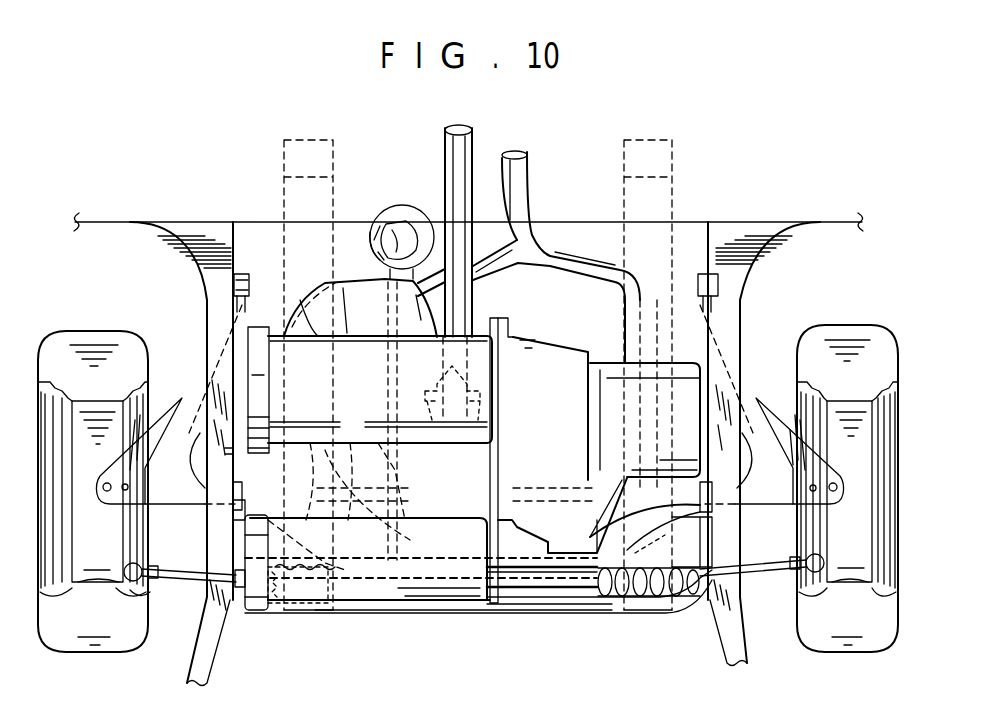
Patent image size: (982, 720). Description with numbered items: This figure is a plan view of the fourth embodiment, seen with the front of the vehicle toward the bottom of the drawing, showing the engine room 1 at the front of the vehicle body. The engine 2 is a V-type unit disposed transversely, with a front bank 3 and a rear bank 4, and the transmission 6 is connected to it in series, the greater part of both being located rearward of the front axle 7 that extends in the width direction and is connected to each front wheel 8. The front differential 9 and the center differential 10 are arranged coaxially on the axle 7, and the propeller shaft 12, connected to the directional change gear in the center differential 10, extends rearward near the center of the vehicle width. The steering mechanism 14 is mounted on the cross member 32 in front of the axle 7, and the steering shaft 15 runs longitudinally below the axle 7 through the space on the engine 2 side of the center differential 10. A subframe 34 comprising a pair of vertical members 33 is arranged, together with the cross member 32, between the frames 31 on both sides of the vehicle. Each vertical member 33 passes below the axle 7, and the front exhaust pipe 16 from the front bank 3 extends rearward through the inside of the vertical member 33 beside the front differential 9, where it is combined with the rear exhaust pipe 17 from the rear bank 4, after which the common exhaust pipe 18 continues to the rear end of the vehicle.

The engine room 1 is at (547, 329).
The engine 2 is at (262, 327).
The front bank 3 is at (490, 614).
The rear bank 4 is at (356, 337).
The transmission 6 is at (604, 362).
The front axle 7 is at (551, 468).
The front wheel 8 is at (62, 328).
The front differential 9 is at (657, 517).
The center differential 10 is at (470, 542).
The propeller shaft 12 is at (446, 163).
The steering mechanism 14 is at (577, 604).
The steering shaft 15 is at (384, 374).
The front exhaust pipe 16 is at (585, 244).
The rear exhaust pipe 17 is at (482, 266).
The common exhaust pipe 18 is at (528, 168).
The frame 31 is at (207, 298).
The cross member 32 is at (542, 617).
The vertical member 33 is at (283, 230).
The subframe 34 is at (612, 622).